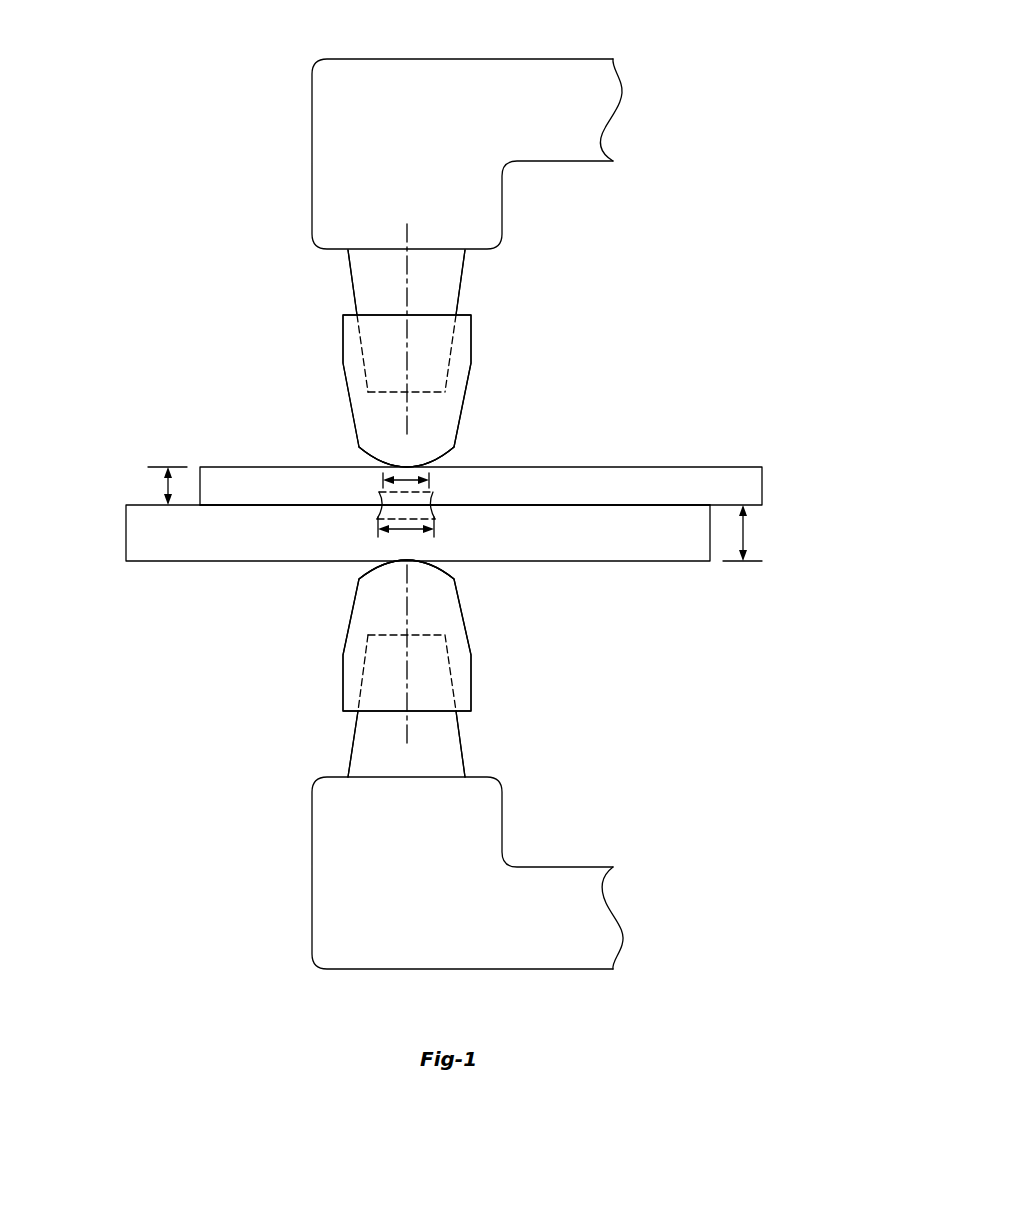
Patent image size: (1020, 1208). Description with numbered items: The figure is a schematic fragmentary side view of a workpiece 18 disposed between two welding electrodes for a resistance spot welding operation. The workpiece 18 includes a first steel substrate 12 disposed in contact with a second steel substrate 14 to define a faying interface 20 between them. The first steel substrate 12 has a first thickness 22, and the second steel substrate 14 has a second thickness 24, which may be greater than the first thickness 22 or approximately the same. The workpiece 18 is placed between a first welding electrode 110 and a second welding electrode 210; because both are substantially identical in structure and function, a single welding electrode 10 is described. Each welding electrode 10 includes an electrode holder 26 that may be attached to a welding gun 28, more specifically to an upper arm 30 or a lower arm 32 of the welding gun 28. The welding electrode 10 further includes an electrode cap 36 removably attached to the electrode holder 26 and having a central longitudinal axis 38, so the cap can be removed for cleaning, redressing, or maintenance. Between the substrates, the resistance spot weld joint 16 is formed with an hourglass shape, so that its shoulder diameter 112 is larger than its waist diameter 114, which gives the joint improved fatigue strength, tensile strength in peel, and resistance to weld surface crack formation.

The welding electrode 10 is at (258, 301).
The first welding electrode 110 is at (258, 301).
The second welding electrode 210 is at (272, 762).
The first steel substrate 12 is at (762, 485).
The second steel substrate 14 is at (126, 532).
The resistance spot weld joint 16 is at (435, 493).
The workpiece 18 is at (82, 487).
The faying interface 20 is at (578, 505).
The first thickness 22 is at (161, 486).
The second thickness 24 is at (751, 533).
The electrode holder 26 is at (463, 272).
The welding gun 28 is at (668, 50).
The upper arm 30 is at (468, 58).
The lower arm 32 is at (358, 970).
The electrode cap 36 is at (471, 342).
The central longitudinal axis 38 is at (407, 415).
The shoulder diameter 112 is at (406, 539).
The waist diameter 114 is at (390, 481).